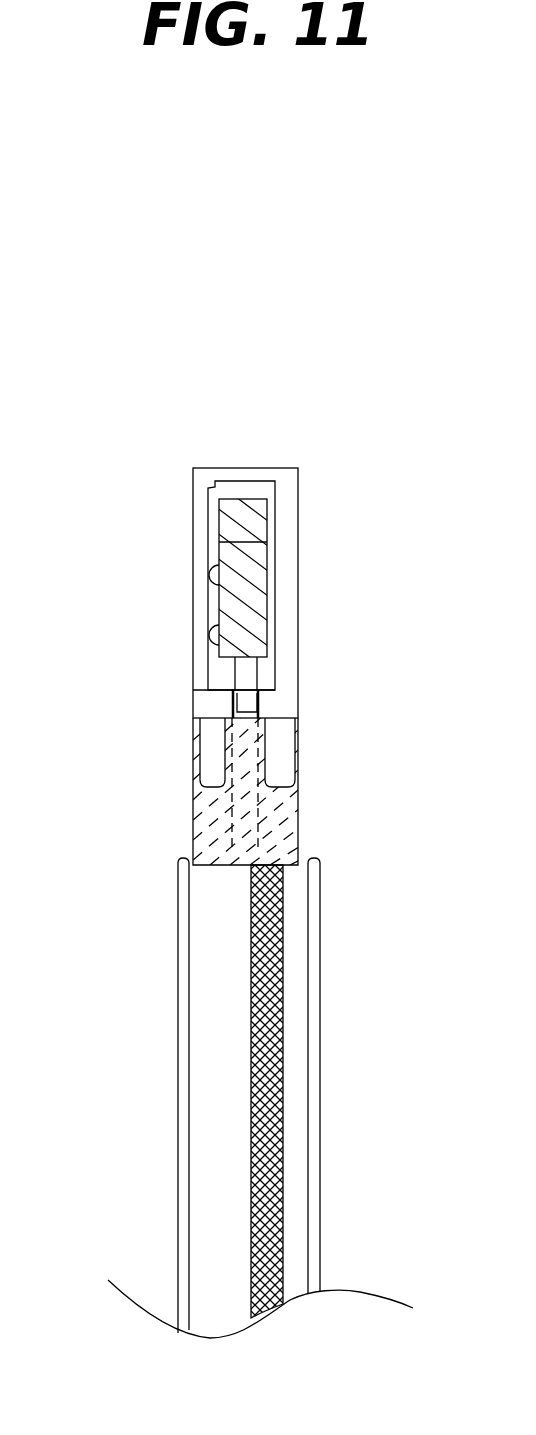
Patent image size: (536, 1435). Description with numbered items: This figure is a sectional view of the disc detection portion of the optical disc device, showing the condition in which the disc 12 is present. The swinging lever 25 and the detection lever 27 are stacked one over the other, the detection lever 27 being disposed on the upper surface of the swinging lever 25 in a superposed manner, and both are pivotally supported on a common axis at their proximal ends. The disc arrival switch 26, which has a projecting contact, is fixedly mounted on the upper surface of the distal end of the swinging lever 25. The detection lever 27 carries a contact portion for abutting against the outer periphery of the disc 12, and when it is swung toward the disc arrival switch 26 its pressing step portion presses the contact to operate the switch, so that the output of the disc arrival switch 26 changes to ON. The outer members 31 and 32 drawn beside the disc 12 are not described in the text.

The swinging lever 25 is at (350, 505).
The disc arrival switch 26 is at (204, 535).
The detection lever 27 is at (302, 807).
The disc 12 is at (283, 1020).
The tube 31 is at (320, 1182).
The tube 32 is at (177, 1075).